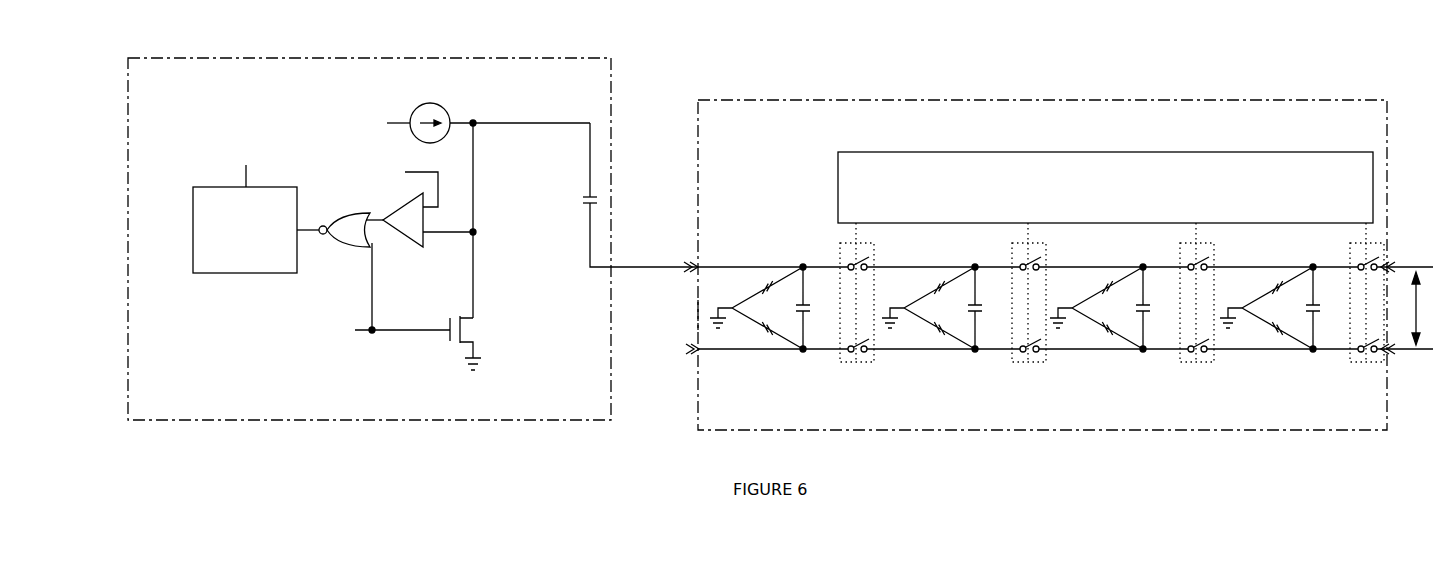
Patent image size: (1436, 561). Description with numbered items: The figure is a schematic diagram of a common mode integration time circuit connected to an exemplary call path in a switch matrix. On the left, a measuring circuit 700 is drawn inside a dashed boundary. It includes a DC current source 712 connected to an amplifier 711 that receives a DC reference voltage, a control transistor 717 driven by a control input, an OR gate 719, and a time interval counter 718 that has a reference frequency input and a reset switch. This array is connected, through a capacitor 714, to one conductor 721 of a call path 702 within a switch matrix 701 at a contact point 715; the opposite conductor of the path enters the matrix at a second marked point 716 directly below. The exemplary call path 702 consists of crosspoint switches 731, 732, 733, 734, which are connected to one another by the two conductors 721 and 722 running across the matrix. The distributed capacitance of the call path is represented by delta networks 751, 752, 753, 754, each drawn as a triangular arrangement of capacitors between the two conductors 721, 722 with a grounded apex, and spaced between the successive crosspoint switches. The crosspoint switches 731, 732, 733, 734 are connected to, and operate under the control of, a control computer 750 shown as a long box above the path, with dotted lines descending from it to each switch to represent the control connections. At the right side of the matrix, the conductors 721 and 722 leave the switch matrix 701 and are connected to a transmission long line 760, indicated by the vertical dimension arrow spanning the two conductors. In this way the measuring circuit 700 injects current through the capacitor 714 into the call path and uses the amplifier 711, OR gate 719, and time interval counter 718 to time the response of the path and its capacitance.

The measuring circuit 700 is at (626, 72).
The switch matrix 701 is at (1158, 92).
The call path 702 is at (680, 314).
The amplifier 711 is at (413, 248).
The DC current source 712 is at (443, 110).
The capacitor 714 is at (576, 194).
The contact point 715 is at (672, 252).
The return line 716 is at (678, 365).
The control transistor 717 is at (481, 330).
The time interval counter 718 is at (230, 262).
The OR gate 719 is at (352, 246).
The conductor 721 is at (713, 255).
The conductor 722 is at (716, 362).
The crosspoint switch 731 is at (894, 292).
The crosspoint switch 732 is at (1067, 292).
The crosspoint switch 733 is at (1235, 292).
The crosspoint switch 734 is at (1325, 299).
The control computer 750 is at (1160, 202).
The delta network 751 is at (760, 308).
The delta network 752 is at (932, 308).
The delta network 753 is at (1100, 308).
The delta network 754 is at (1270, 308).
The transmission long line 760 is at (1415, 308).